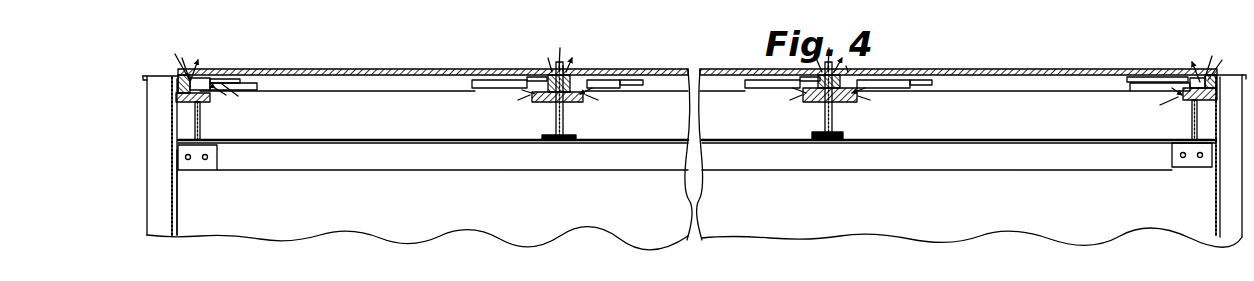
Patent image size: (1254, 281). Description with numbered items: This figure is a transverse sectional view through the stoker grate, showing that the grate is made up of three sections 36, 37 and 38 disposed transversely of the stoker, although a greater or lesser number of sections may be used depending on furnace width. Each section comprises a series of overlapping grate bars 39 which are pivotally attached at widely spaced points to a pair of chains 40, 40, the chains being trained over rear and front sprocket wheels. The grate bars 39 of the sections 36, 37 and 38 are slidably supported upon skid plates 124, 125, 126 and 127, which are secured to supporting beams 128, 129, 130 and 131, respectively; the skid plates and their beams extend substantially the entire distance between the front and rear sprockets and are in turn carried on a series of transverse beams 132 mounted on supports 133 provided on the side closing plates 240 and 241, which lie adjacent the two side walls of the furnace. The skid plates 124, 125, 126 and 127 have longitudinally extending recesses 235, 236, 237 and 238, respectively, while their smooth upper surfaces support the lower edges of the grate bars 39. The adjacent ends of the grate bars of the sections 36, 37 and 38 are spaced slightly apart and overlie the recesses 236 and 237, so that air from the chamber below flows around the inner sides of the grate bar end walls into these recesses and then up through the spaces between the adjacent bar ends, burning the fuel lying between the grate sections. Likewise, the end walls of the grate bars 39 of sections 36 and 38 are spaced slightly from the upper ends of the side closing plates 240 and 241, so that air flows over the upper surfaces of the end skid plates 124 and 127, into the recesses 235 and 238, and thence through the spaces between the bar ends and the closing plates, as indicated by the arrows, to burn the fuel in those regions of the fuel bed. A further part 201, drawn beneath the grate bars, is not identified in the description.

The grate section 36 is at (372, 61).
The grate section 37 is at (666, 63).
The grate section 38 is at (1070, 58).
The grate bar 39 is at (401, 69).
The chain 40 is at (244, 92).
The skid plate 124 is at (170, 122).
The skid plate 125 is at (572, 104).
The skid plate 126 is at (843, 104).
The skid plate 127 is at (1192, 116).
The supporting beam 128 is at (202, 130).
The supporting beam 129 is at (554, 128).
The supporting beam 130 is at (824, 124).
The supporting beam 131 is at (1191, 125).
The transverse beam 132 is at (302, 169).
The support 133 is at (218, 158).
The retaining bar 201 is at (258, 84).
The recess 235 is at (192, 80).
The recess 236 is at (563, 72).
The recess 237 is at (848, 72).
The recess 238 is at (1200, 76).
The side closing plate 240 is at (178, 184).
The side closing plate 241 is at (1216, 193).